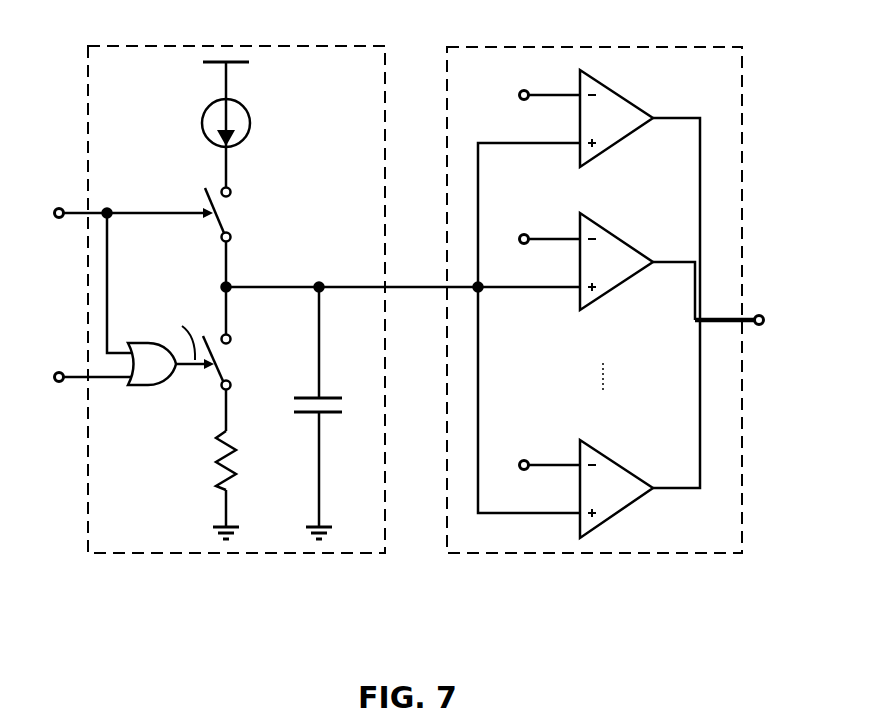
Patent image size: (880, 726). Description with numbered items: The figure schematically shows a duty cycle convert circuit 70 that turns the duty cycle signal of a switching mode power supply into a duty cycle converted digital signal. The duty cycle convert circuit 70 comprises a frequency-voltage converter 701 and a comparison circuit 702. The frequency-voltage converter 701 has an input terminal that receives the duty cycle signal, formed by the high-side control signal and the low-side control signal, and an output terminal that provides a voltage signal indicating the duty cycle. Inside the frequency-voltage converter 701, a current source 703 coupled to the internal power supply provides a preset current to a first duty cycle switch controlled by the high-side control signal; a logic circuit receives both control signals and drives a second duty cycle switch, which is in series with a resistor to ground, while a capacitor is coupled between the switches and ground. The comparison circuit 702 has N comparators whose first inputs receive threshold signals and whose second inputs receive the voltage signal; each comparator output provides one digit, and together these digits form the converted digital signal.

The duty cycle convert circuit 70 is at (815, 112).
The frequency-voltage converter 701 is at (360, 92).
The comparison circuit 702 is at (725, 92).
The current source 703 is at (252, 139).